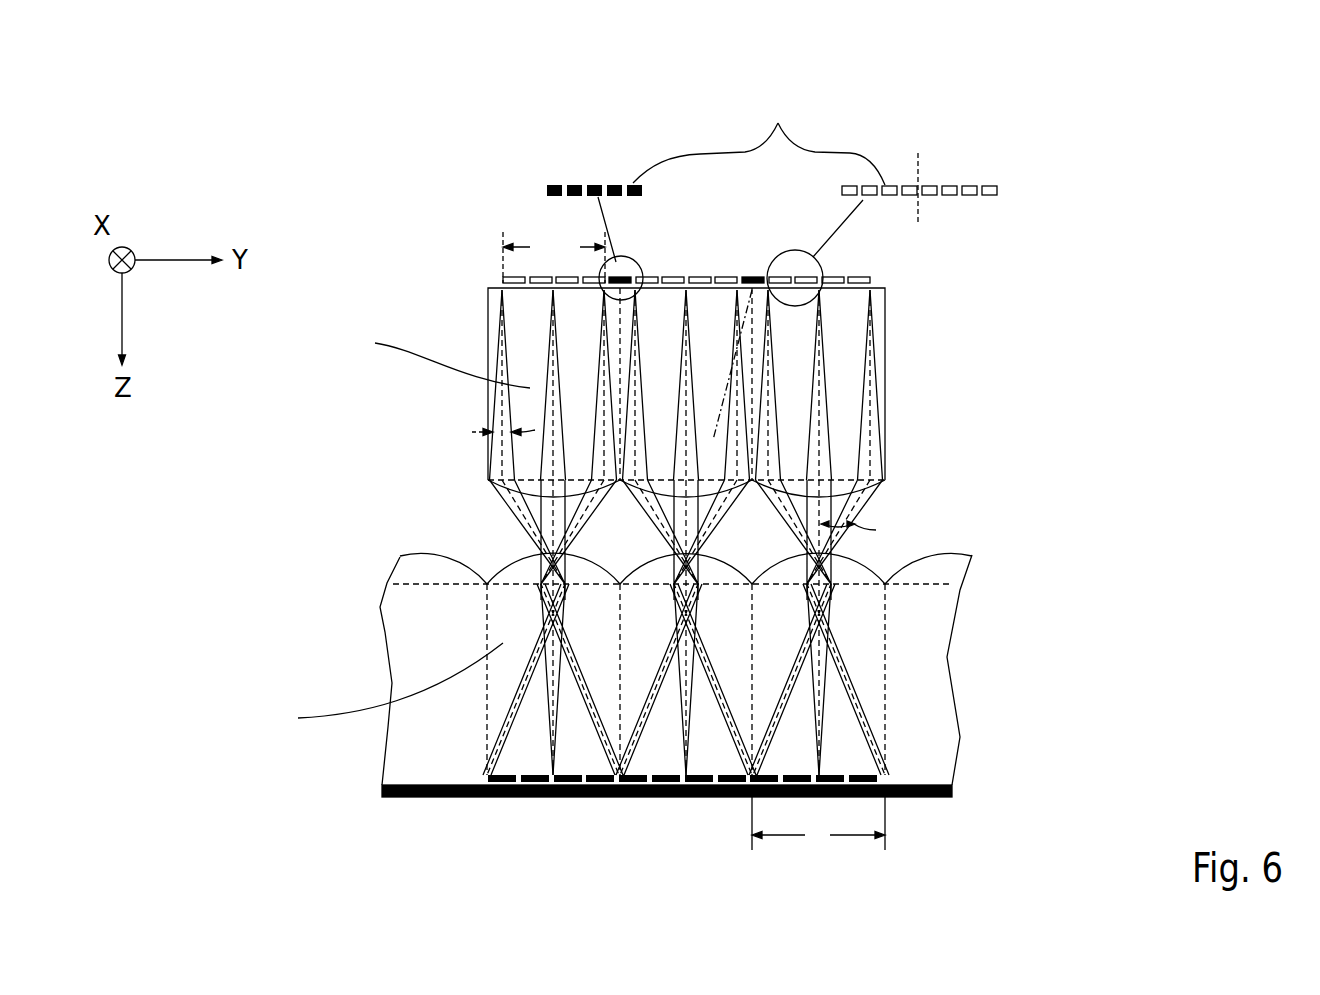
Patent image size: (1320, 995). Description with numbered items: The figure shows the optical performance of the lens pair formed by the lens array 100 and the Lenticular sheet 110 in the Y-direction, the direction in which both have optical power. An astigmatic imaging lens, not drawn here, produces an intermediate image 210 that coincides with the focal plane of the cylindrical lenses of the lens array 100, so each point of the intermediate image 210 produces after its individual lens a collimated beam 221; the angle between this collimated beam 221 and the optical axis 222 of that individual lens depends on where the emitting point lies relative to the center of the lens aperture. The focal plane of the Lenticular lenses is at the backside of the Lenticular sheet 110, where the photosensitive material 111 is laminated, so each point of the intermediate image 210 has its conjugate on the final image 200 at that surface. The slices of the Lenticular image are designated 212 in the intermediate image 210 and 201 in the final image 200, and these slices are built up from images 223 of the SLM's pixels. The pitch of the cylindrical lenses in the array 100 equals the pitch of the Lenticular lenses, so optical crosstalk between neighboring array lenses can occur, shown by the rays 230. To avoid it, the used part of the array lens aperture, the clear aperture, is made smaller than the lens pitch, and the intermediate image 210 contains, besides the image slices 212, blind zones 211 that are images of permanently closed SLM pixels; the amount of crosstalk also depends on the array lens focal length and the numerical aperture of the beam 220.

The lens array 100 is at (461, 348).
The Lenticular sheet 110 is at (361, 555).
The photosensitive material 111 is at (420, 797).
The final image plane 200 is at (514, 751).
The final image slices 201 is at (800, 775).
The intermediate image 210 is at (899, 265).
The blind zones 211 is at (767, 282).
The intermediate image slices 212 is at (958, 156).
The light beam cones 220 is at (830, 425).
The collimated beam 221 is at (820, 442).
The optical axis 222 is at (783, 508).
The images of SLM pixels 223 is at (759, 137).
The crosstalk rays 230 is at (725, 405).